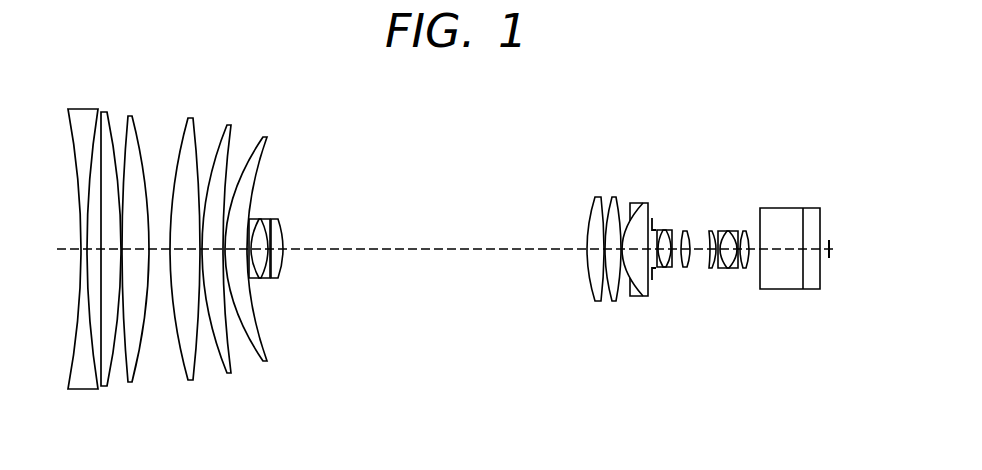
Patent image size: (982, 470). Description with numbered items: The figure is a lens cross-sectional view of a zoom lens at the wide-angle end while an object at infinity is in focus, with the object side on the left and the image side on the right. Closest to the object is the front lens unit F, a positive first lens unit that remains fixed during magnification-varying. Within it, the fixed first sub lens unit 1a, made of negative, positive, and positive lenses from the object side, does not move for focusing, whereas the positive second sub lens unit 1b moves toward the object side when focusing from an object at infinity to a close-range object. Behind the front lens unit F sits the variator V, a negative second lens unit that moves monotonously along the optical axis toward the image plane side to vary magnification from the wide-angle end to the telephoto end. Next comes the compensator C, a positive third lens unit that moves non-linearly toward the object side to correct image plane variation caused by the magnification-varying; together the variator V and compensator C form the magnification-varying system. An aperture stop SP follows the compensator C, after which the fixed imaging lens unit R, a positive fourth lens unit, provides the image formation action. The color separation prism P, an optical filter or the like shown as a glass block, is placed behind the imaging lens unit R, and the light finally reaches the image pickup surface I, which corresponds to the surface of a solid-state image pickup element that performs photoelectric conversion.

The first sub lens unit 1a is at (153, 92).
The second sub lens unit 1b is at (255, 92).
The front lens unit F is at (167, 250).
The variator V is at (288, 368).
The compensator C is at (647, 317).
The aperture stop SP is at (661, 214).
The imaging lens unit R is at (752, 317).
The color separation prism P is at (822, 317).
The image pickup surface I is at (831, 226).